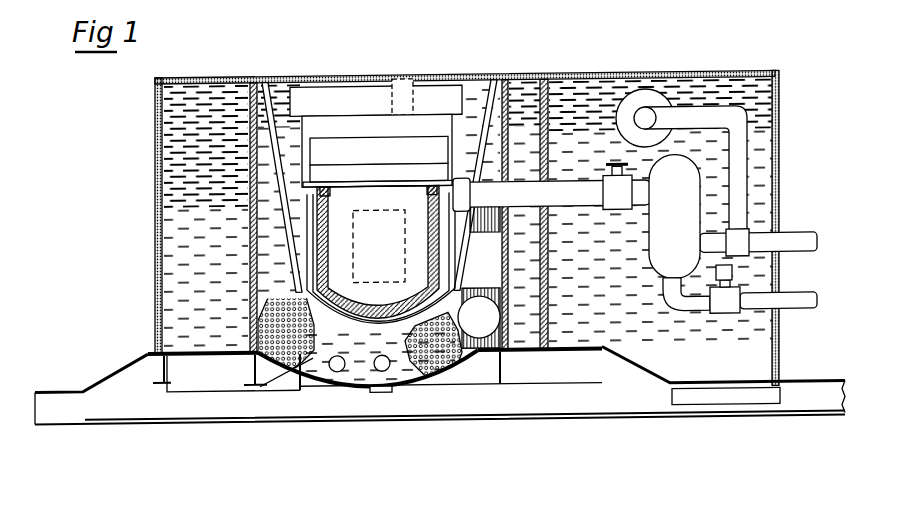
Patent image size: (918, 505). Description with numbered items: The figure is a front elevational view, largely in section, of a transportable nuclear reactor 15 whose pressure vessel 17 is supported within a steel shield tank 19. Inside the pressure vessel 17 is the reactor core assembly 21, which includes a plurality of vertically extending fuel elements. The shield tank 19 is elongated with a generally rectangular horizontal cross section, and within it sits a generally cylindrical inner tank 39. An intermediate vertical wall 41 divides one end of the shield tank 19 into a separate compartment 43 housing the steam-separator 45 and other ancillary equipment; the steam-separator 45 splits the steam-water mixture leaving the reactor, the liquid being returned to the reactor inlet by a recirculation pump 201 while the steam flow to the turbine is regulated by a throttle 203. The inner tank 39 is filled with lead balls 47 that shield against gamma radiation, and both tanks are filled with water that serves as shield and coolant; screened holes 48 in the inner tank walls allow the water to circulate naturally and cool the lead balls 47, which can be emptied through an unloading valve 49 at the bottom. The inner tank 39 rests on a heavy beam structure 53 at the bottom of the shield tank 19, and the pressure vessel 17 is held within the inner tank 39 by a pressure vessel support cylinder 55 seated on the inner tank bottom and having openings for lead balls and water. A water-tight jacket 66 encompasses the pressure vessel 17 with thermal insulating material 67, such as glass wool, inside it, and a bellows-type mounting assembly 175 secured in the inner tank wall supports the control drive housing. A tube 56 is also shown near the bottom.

The nuclear reactor 15 is at (357, 178).
The pressure vessel 17 is at (389, 202).
The steel shield tank 19 is at (157, 139).
The reactor core assembly 21 is at (369, 250).
The inner tank 39 is at (250, 199).
The intermediate vertical wall 41 is at (548, 125).
The separate compartment 43 is at (592, 262).
The steam-separator 45 is at (661, 209).
The lead balls 47 is at (360, 328).
The screened holes 48 is at (250, 139).
The unloading valve 49 is at (381, 396).
The heavy beam structure 53 is at (558, 402).
The pressure vessel support cylinder 55 is at (320, 336).
The tube 56 is at (359, 363).
The water-tight jacket 66 is at (331, 243).
The thermal insulating material 67 is at (334, 195).
The bellows-type mounting assembly 175 is at (467, 329).
The recirculation pump 201 is at (638, 104).
The throttle 203 is at (738, 322).